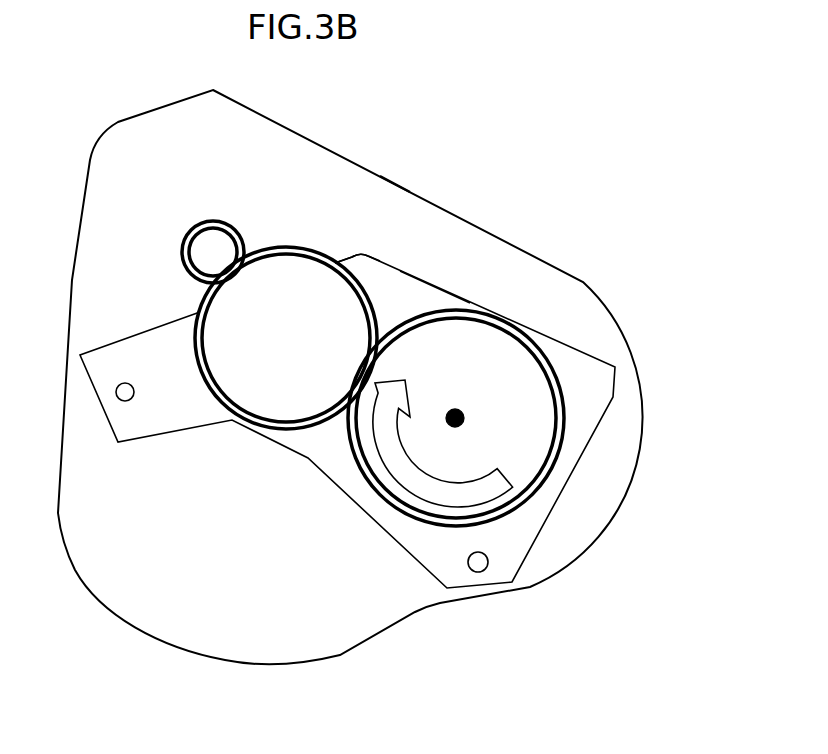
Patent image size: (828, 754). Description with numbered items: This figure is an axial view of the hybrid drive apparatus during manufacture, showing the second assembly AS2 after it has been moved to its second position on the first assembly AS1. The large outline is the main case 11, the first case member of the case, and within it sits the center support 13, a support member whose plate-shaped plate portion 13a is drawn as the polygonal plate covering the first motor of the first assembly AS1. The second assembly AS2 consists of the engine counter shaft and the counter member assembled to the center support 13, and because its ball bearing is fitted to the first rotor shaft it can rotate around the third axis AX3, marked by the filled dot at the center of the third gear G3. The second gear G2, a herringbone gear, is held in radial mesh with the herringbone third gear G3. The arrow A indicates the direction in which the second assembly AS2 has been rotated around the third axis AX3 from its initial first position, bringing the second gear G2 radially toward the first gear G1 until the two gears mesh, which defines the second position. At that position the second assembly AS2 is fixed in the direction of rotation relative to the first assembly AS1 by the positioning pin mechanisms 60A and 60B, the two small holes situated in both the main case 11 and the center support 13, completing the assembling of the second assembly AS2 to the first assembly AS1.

The main case 11 is at (320, 142).
The first assembly AS1 is at (393, 175).
The second assembly AS2 is at (442, 282).
The center support 13 is at (488, 297).
The plate portion 13a is at (375, 262).
The first gear G1 is at (215, 221).
The second gear G2 is at (198, 300).
The third gear G3 is at (507, 320).
The arrow A is at (443, 443).
The third axis AX3 is at (466, 419).
The positioning pin mechanism 60A is at (133, 396).
The positioning pin mechanism 60B is at (485, 567).